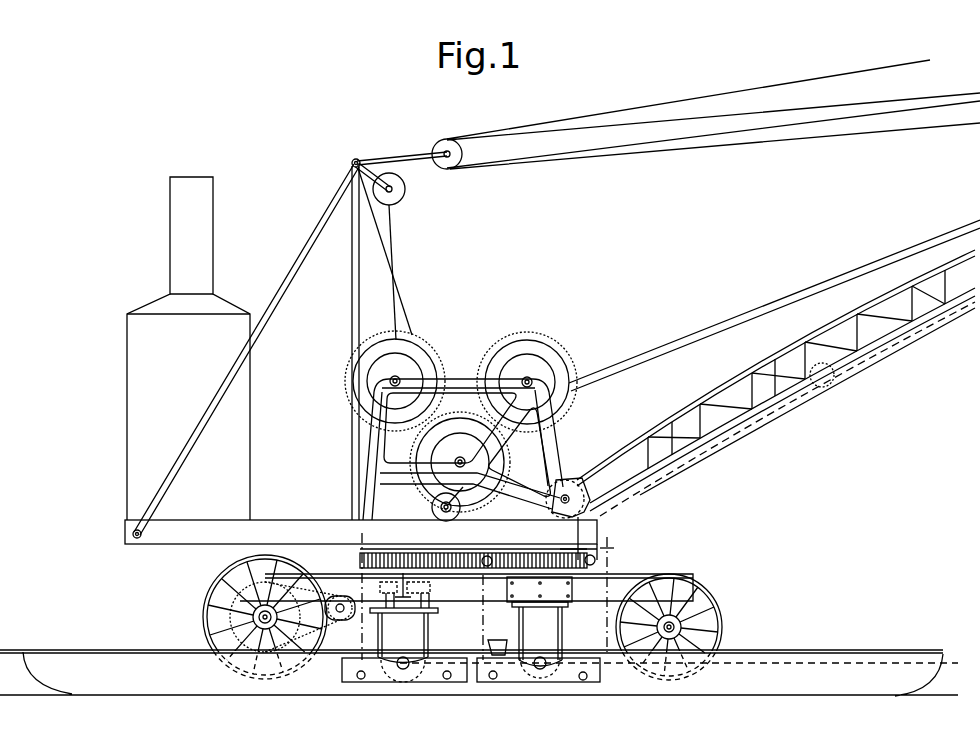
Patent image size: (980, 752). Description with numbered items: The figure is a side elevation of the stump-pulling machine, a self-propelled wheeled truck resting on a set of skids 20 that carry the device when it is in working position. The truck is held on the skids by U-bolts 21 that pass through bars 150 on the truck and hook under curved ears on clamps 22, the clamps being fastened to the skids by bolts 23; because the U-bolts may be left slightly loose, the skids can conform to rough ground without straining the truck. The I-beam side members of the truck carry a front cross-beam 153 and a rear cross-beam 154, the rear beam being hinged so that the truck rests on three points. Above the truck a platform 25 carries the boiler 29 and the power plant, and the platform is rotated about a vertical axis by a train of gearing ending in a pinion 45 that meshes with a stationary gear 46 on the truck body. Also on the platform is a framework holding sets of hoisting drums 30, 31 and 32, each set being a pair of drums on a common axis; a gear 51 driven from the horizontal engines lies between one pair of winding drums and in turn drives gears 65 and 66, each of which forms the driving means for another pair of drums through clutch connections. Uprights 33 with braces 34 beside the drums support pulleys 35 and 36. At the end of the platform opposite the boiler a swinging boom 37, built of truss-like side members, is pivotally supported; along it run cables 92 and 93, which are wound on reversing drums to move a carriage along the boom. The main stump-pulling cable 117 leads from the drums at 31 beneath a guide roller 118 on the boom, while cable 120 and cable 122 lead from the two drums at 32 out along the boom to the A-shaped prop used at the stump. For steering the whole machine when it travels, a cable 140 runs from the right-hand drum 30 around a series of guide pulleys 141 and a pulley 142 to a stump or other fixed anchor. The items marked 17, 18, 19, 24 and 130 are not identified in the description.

The vertical axis of boom pivot 17 is at (622, 588).
The vertical axis of turntable 18 is at (356, 544).
The bracket 19 is at (386, 606).
The skids 20 is at (112, 659).
The U-bolts 21 is at (377, 621).
The clamps 22 is at (412, 656).
The bolts 23 is at (356, 675).
The chassis frame 24 is at (623, 577).
The platform 25 is at (296, 522).
The boiler 29 is at (126, 428).
The hoisting drums 30 is at (415, 344).
The hoisting drums 31 is at (450, 420).
The hoisting drums 32 is at (564, 363).
The uprights 33 is at (351, 291).
The braces 34 is at (316, 233).
The pulley 35 is at (448, 170).
The pulley 36 is at (398, 201).
The swinging boom 37 is at (763, 409).
The pinion 45 is at (358, 562).
The stationary gear 46 is at (465, 617).
The gear 51 is at (548, 503).
The gear 65 is at (345, 386).
The gear 66 is at (545, 340).
The cable 92 is at (957, 328).
The cable 93 is at (902, 302).
The main cable 117 is at (911, 357).
The guide roller 118 is at (830, 384).
The cable 120 is at (662, 345).
The cable 122 is at (684, 343).
The bracket 130 is at (438, 612).
The steering cable 140 is at (438, 630).
The guide pulleys 141 is at (432, 507).
The pulley 142 is at (504, 640).
The bars 150 is at (524, 650).
The front cross-beam 153 is at (538, 680).
The rear cross-beam 154 is at (402, 680).